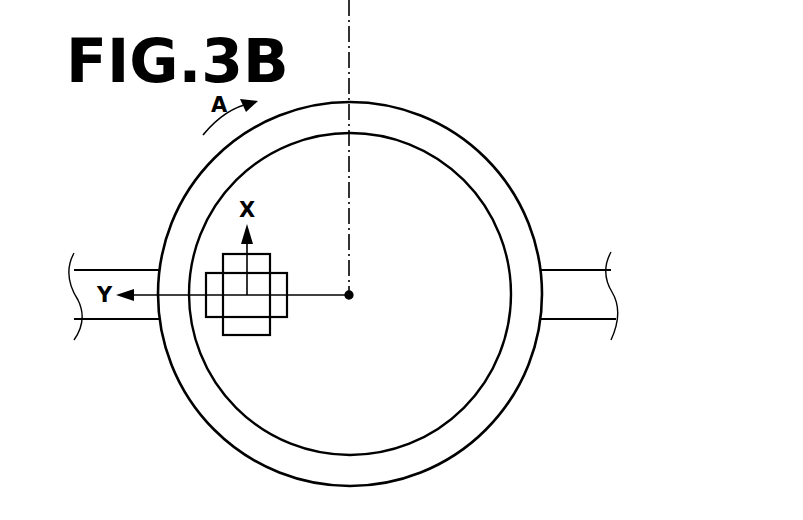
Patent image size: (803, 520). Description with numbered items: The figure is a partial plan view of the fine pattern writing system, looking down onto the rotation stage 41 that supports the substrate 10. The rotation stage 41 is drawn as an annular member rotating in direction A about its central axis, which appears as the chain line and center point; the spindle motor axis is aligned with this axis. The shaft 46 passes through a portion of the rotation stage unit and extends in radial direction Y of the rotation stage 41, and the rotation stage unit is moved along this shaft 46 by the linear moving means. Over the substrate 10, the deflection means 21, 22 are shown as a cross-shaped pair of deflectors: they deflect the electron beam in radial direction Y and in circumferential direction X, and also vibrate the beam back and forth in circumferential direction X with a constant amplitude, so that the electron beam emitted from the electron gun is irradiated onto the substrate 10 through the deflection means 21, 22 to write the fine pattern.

The substrate 10 is at (381, 135).
The rotation stage 41 is at (460, 143).
The shaft 46 is at (568, 282).
The deflection means 21 is at (212, 318).
The deflection means 22 is at (262, 263).